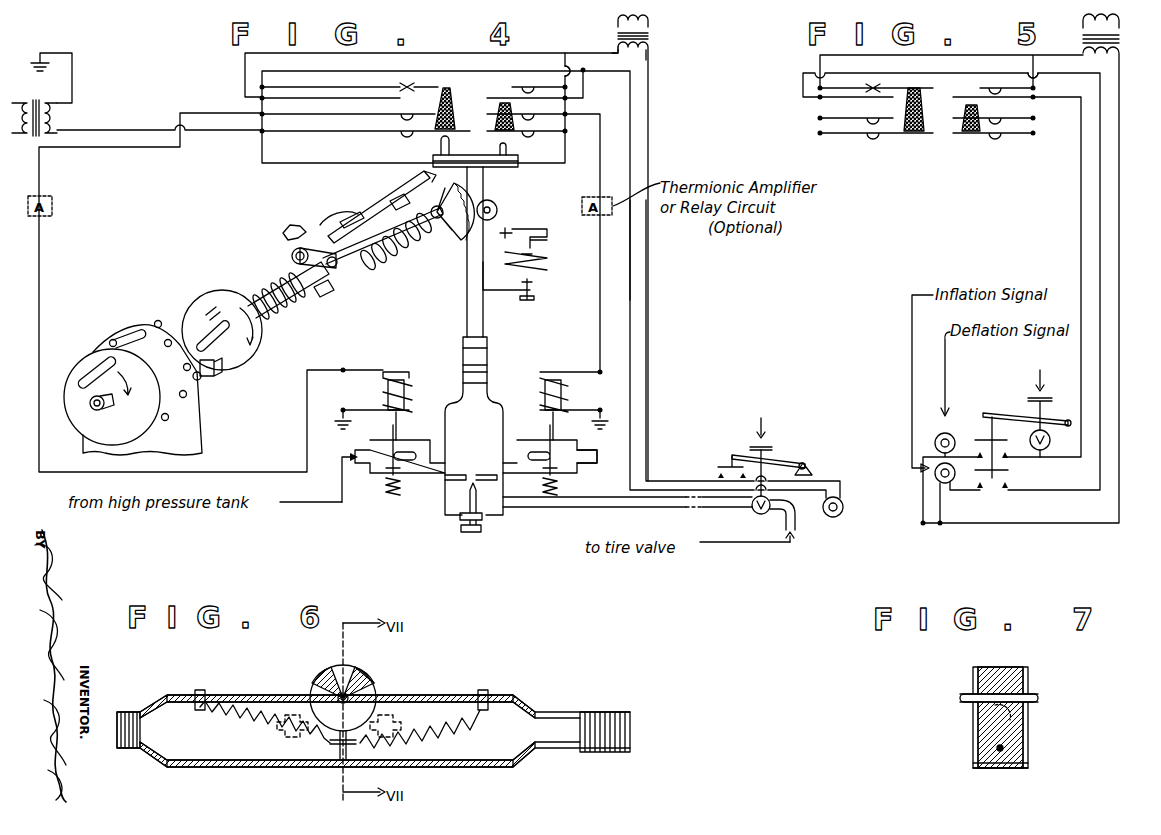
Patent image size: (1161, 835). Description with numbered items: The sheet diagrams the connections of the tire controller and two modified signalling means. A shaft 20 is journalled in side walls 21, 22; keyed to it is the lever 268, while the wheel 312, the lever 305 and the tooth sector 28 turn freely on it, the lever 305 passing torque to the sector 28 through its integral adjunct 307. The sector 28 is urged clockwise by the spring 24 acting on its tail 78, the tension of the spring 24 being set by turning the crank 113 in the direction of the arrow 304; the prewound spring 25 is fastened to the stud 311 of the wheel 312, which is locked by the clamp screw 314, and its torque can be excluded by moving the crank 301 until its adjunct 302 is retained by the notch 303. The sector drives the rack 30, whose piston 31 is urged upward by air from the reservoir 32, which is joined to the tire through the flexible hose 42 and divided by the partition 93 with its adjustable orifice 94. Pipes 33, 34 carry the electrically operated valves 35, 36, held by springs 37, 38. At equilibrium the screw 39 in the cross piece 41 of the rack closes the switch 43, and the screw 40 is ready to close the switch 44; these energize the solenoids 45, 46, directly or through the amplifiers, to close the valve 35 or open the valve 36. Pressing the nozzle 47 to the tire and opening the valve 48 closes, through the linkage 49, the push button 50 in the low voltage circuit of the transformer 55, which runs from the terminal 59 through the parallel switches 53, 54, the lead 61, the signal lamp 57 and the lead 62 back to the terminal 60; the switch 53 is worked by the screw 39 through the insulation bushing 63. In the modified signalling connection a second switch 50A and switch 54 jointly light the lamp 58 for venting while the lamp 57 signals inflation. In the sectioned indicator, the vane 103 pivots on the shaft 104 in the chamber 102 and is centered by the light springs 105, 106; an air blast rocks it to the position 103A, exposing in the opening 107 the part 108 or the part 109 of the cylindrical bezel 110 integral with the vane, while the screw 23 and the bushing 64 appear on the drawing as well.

In FIG. 4, the shaft 20 is at (95, 400).
In FIG. 4, the side wall 21 is at (290, 242).
In FIG. 4, the side wall 22 is at (200, 440).
In FIG. 4, the pivot 23 is at (481, 204).
In FIG. 4, the spring 24 is at (386, 256).
In FIG. 4, the spring 25 is at (278, 322).
In FIG. 4, the tooth sector 28 is at (456, 240).
In FIG. 4, the rack 30 is at (485, 324).
In FIG. 4, the piston 31 is at (488, 351).
In FIG. 4, the reservoir 32 is at (491, 402).
In FIG. 4, the pipe 33 is at (360, 468).
In FIG. 4, the pipe 34 is at (585, 467).
In FIG. 4, the valve 35 is at (405, 478).
In FIG. 4, the valve 36 is at (540, 478).
In FIG. 4, the spring 37 is at (396, 507).
In FIG. 4, the spring 38 is at (549, 498).
In FIG. 4, the adjustment screw 39 is at (440, 146).
In FIG. 4, the screw 40 is at (508, 153).
In FIG. 4, the cross piece 41 is at (518, 166).
In FIG. 4, the flexible hose 42 is at (590, 508).
In FIG. 6, the flexible hose 42 is at (124, 750).
In FIG. 4, the switch 43 is at (385, 122).
In FIG. 5, the switch 43 is at (850, 128).
In FIG. 4, the switch 44 is at (566, 118).
In FIG. 5, the switch 44 is at (1022, 125).
In FIG. 4, the solenoid 45 is at (413, 386).
In FIG. 4, the solenoid 46 is at (566, 398).
In FIG. 4, the nozzle 47 is at (798, 545).
In FIG. 4, the valve 48 is at (753, 511).
In FIG. 5, the valve 48 is at (1045, 452).
In FIG. 4, the linkage 49 is at (778, 463).
In FIG. 5, the linkage 49 is at (1065, 418).
In FIG. 4, the push button 50 is at (718, 467).
In FIG. 5, the push button 50 is at (978, 478).
In FIG. 5, the switch 50A is at (972, 440).
In FIG. 4, the switch 53 is at (300, 90).
In FIG. 5, the switch 53 is at (848, 92).
In FIG. 4, the switch 54 is at (563, 80).
In FIG. 5, the switch 54 is at (1036, 84).
In FIG. 4, the transformer 55 is at (650, 36).
In FIG. 5, the transformer 55 is at (1120, 42).
In FIG. 4, the signal lamp 57 is at (836, 517).
In FIG. 5, the signal lamp 57 is at (940, 492).
In FIG. 5, the signal lamp 58 is at (947, 465).
In FIG. 4, the terminal 59 is at (617, 50).
In FIG. 4, the terminal 60 is at (648, 52).
In FIG. 4, the lead 61 is at (628, 305).
In FIG. 4, the lead 62 is at (646, 330).
In FIG. 4, the insulation bushing 63 is at (453, 110).
In FIG. 4, the insulator 64 is at (502, 114).
In FIG. 4, the tail 78 is at (414, 181).
In FIG. 4, the partition 93 is at (453, 470).
In FIG. 4, the adjustable orifice 94 is at (475, 475).
In FIG. 6, the chamber 102 is at (465, 768).
In FIG. 7, the chamber 102 is at (1010, 769).
In FIG. 6, the vane 103 is at (342, 757).
In FIG. 7, the vane 103 is at (975, 755).
In FIG. 6, the vane position 103A is at (268, 708).
In FIG. 6, the shaft 104 is at (372, 685).
In FIG. 7, the shaft 104 is at (1012, 704).
In FIG. 6, the light spring 105 is at (245, 728).
In FIG. 6, the light spring 106 is at (435, 725).
In FIG. 6, the opening 107 is at (362, 658).
In FIG. 7, the opening 107 is at (1012, 668).
In FIG. 6, the bezel part 108 is at (322, 685).
In FIG. 6, the bezel part 109 is at (378, 694).
In FIG. 6, the cylindrical bezel 110 is at (335, 697).
In FIG. 7, the cylindrical bezel 110 is at (1028, 698).
In FIG. 4, the crank 113 is at (96, 372).
In FIG. 4, the lever 268 is at (340, 276).
In FIG. 4, the crank 301 is at (346, 222).
In FIG. 4, the adjunct 302 is at (330, 216).
In FIG. 4, the notch 303 is at (285, 229).
In FIG. 4, the arrow 304 is at (140, 382).
In FIG. 4, the lever 305 is at (330, 296).
In FIG. 4, the adjunct 307 is at (392, 200).
In FIG. 4, the stud 311 is at (250, 292).
In FIG. 4, the wheel 312 is at (249, 353).
In FIG. 4, the clamp screw 314 is at (212, 392).